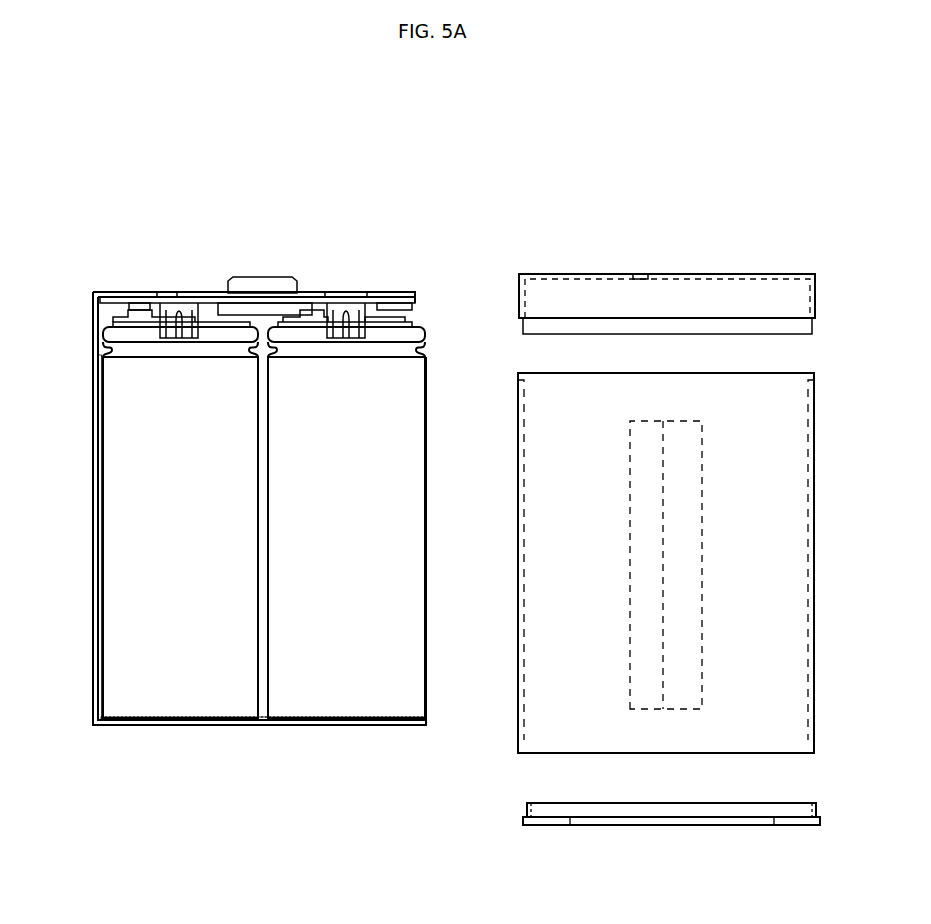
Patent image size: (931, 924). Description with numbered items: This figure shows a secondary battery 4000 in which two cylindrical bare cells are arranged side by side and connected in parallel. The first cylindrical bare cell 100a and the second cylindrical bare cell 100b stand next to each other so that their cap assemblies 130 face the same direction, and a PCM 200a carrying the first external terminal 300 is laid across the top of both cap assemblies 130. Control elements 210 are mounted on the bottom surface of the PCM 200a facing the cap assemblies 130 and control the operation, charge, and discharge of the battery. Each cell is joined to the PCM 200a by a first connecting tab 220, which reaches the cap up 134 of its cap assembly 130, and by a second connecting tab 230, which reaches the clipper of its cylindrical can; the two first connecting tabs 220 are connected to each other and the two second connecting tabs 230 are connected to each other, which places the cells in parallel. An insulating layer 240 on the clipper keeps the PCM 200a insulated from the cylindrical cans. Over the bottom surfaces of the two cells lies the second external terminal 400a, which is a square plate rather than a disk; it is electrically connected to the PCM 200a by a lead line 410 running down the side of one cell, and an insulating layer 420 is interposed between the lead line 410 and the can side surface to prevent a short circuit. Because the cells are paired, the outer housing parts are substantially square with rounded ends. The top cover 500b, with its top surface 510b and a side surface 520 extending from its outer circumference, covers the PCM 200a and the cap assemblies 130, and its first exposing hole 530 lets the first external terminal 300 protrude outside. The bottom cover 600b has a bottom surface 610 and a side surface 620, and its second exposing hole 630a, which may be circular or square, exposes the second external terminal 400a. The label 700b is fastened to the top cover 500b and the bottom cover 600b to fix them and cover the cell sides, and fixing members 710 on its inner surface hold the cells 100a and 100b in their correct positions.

The secondary battery 4000 is at (72, 201).
The second external terminal 400a is at (285, 726).
The lead line 410 is at (96, 432).
The insulating layer 420 is at (96, 485).
The first cylindrical bare cell 100a is at (92, 567).
The second cylindrical bare cell 100b is at (436, 540).
The cap assembly 130 is at (80, 340).
The insulating layer 240 is at (112, 320).
The cap up 134 is at (128, 322).
The PCM 200a is at (404, 300).
The control elements 210 is at (141, 301).
The first connecting tab 220 is at (188, 296).
The second connecting tab 230 is at (178, 310).
The first external terminal 300 is at (262, 276).
The top cover 500b is at (830, 220).
The top cover body 510b is at (757, 278).
The side surface 520 is at (812, 303).
The first exposing hole 530 is at (671, 274).
The label 700b is at (815, 562).
The fixing members 710 is at (702, 470).
The bottom cover 600b is at (460, 805).
The side surface 620 is at (525, 808).
The bottom surface 610 is at (523, 823).
The second exposing hole 630a is at (672, 828).